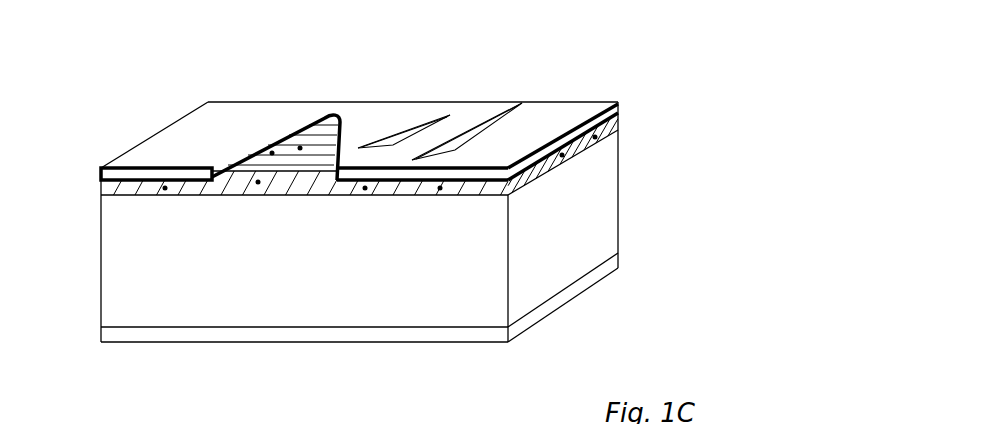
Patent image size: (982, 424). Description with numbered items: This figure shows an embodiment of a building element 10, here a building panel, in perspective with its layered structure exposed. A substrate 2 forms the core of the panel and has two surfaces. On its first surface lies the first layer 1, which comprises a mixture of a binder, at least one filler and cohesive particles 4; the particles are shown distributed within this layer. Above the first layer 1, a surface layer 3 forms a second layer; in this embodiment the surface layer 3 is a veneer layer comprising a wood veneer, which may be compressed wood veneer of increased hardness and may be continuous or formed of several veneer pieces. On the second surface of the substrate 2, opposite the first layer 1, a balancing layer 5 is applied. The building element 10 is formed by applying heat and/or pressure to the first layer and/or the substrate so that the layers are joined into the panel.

The building element 10 is at (117, 102).
The first layer 1 is at (621, 125).
The substrate 2 is at (597, 208).
The surface layer 3 is at (619, 105).
The cohesive particles 4 is at (165, 188).
The balancing layer 5 is at (613, 268).